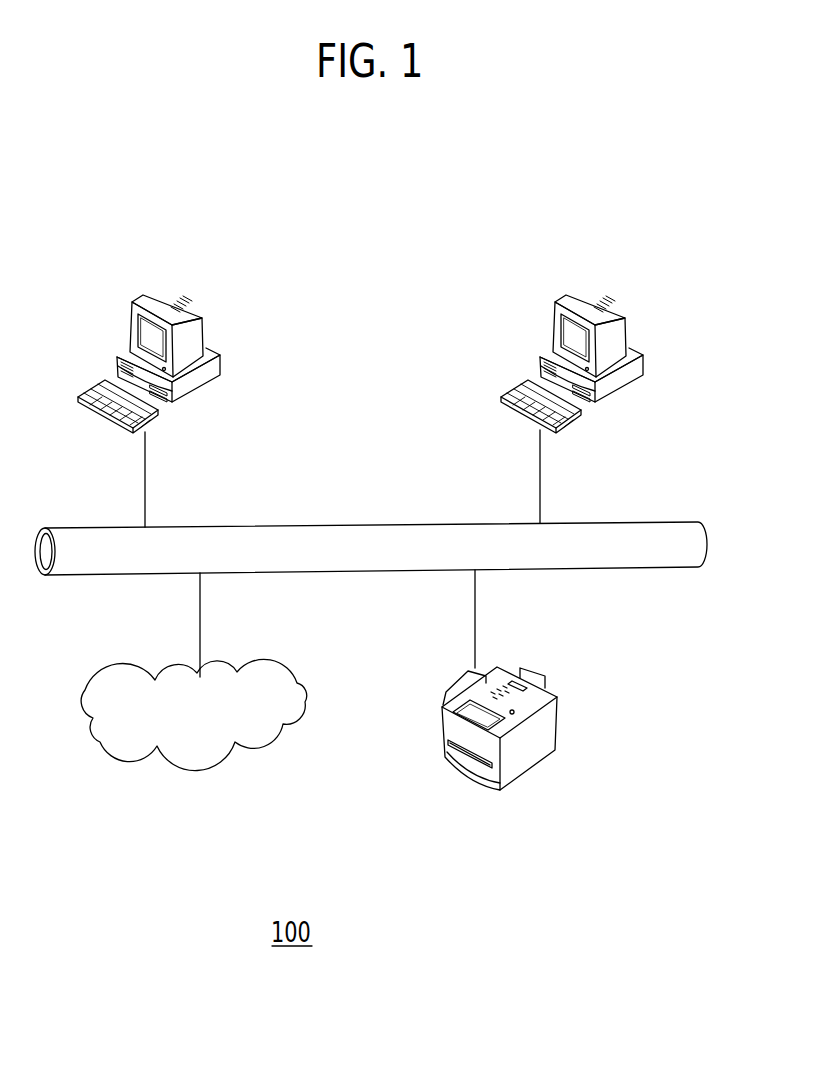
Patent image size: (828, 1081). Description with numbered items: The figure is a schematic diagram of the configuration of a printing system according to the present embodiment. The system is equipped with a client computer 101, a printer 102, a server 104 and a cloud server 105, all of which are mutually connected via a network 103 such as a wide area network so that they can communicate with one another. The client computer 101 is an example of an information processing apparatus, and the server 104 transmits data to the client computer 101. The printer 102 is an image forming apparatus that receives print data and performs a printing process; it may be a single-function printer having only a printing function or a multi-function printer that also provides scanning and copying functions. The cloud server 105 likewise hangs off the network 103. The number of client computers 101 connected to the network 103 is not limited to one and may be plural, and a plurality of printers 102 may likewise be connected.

The client computer 101 is at (160, 299).
The printer 102 is at (485, 787).
The network 103 is at (320, 525).
The server 104 is at (583, 299).
The cloud server 105 is at (190, 760).